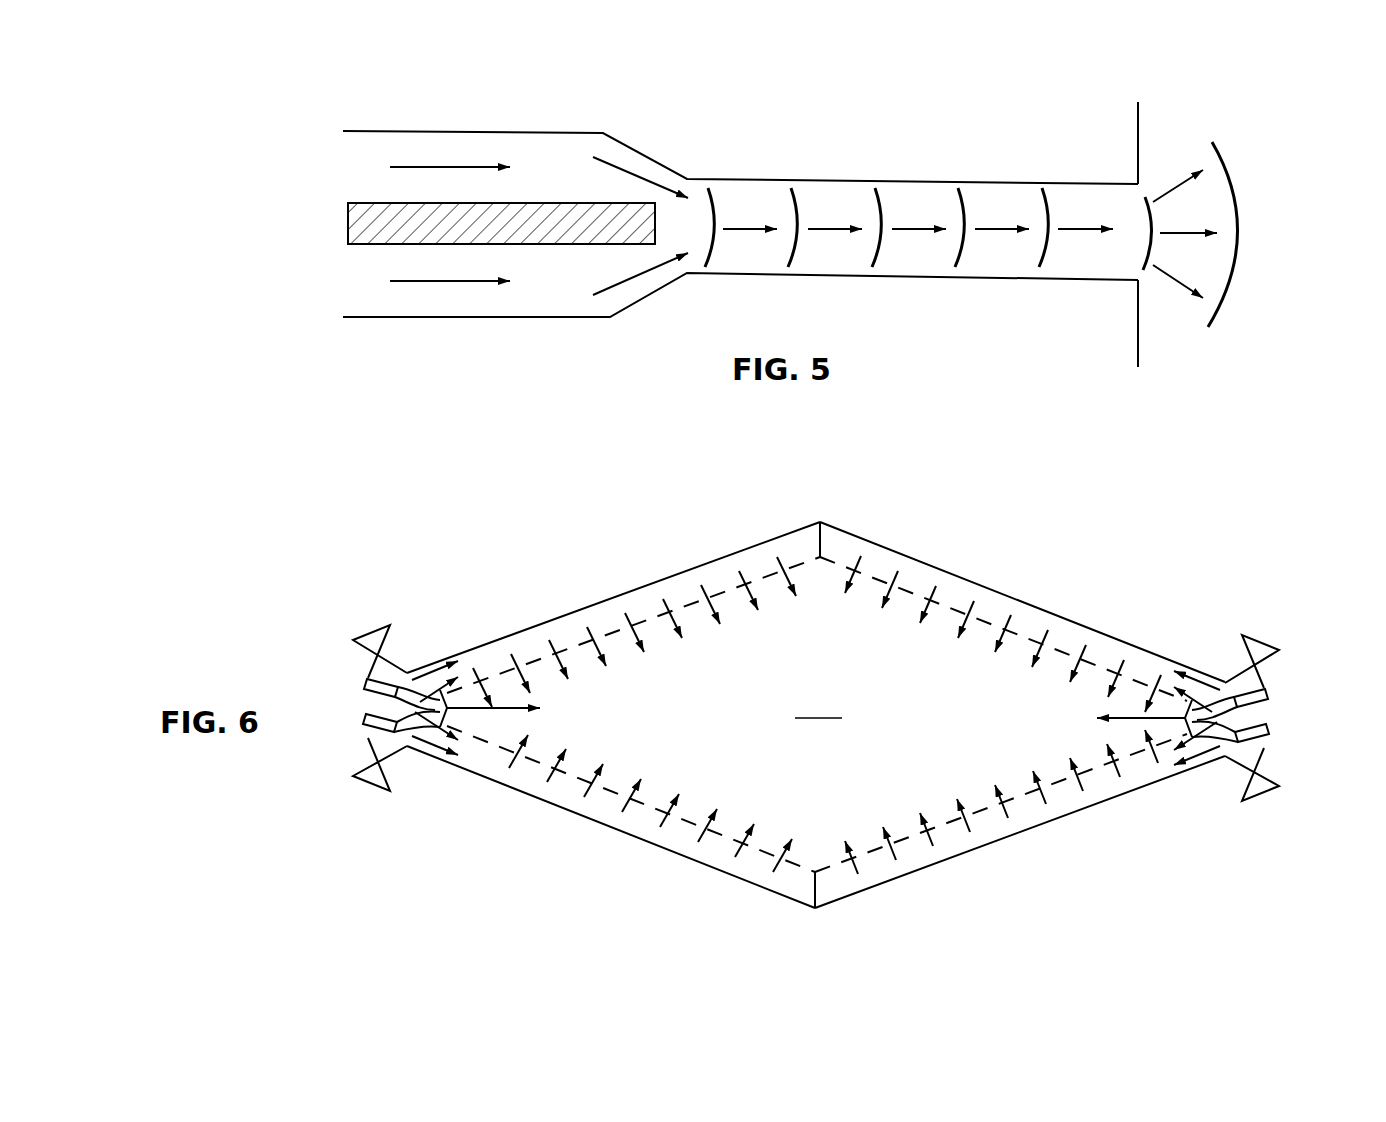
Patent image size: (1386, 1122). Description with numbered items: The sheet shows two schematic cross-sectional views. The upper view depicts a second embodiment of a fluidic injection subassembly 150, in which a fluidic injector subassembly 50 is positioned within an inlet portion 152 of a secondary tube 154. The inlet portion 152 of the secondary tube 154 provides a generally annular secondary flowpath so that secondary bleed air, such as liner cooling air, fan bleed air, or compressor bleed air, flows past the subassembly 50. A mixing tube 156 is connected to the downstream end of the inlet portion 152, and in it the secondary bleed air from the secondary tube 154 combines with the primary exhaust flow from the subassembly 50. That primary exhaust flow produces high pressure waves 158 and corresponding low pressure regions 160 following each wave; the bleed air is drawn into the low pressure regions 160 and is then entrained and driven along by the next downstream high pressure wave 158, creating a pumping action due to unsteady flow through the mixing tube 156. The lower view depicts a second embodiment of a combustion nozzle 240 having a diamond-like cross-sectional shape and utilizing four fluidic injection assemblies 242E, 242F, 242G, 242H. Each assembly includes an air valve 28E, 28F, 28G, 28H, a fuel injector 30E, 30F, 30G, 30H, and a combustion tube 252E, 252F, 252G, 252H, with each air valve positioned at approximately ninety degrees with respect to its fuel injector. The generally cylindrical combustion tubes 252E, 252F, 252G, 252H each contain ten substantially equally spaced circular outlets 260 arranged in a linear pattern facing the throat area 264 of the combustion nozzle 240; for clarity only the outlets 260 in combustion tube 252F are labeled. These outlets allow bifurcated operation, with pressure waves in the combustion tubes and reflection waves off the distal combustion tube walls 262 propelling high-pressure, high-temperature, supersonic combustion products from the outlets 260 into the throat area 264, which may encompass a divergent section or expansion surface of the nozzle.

In FIG. 5, the fluidic injector subassembly 50 is at (388, 230).
In FIG. 5, the fluidic injection subassembly 150 is at (547, 88).
In FIG. 5, the inlet portion 152 is at (495, 318).
In FIG. 5, the secondary tube 154 is at (433, 128).
In FIG. 5, the mixing tube 156 is at (1094, 184).
In FIG. 5, the high pressure waves 158 is at (705, 188).
In FIG. 5, the low pressure regions 160 is at (758, 265).
In FIG. 6, the combustion nozzle 240 is at (650, 528).
In FIG. 6, the fluidic injection assembly 242E is at (498, 633).
In FIG. 6, the fluidic injection assembly 242F is at (860, 536).
In FIG. 6, the fluidic injection assembly 242G is at (1118, 802).
In FIG. 6, the fluidic injection assembly 242H is at (672, 852).
In FIG. 6, the combustion tube 252E is at (578, 606).
In FIG. 6, the combustion tube 252F is at (987, 586).
In FIG. 6, the combustion tube 252G is at (1000, 845).
In FIG. 6, the combustion tube 252H is at (578, 818).
In FIG. 6, the outlets 260 is at (930, 600).
In FIG. 6, the distal combustion tube walls 262 is at (819, 540).
In FIG. 6, the throat area 264 is at (818, 704).
In FIG. 6, the air valve 28E is at (378, 632).
In FIG. 6, the air valve 28F is at (1262, 644).
In FIG. 6, the air valve 28G is at (1262, 800).
In FIG. 6, the air valve 28H is at (378, 784).
In FIG. 6, the fuel injector 30E is at (367, 683).
In FIG. 6, the fuel injector 30F is at (1268, 700).
In FIG. 6, the fuel injector 30G is at (1268, 750).
In FIG. 6, the fuel injector 30H is at (365, 716).